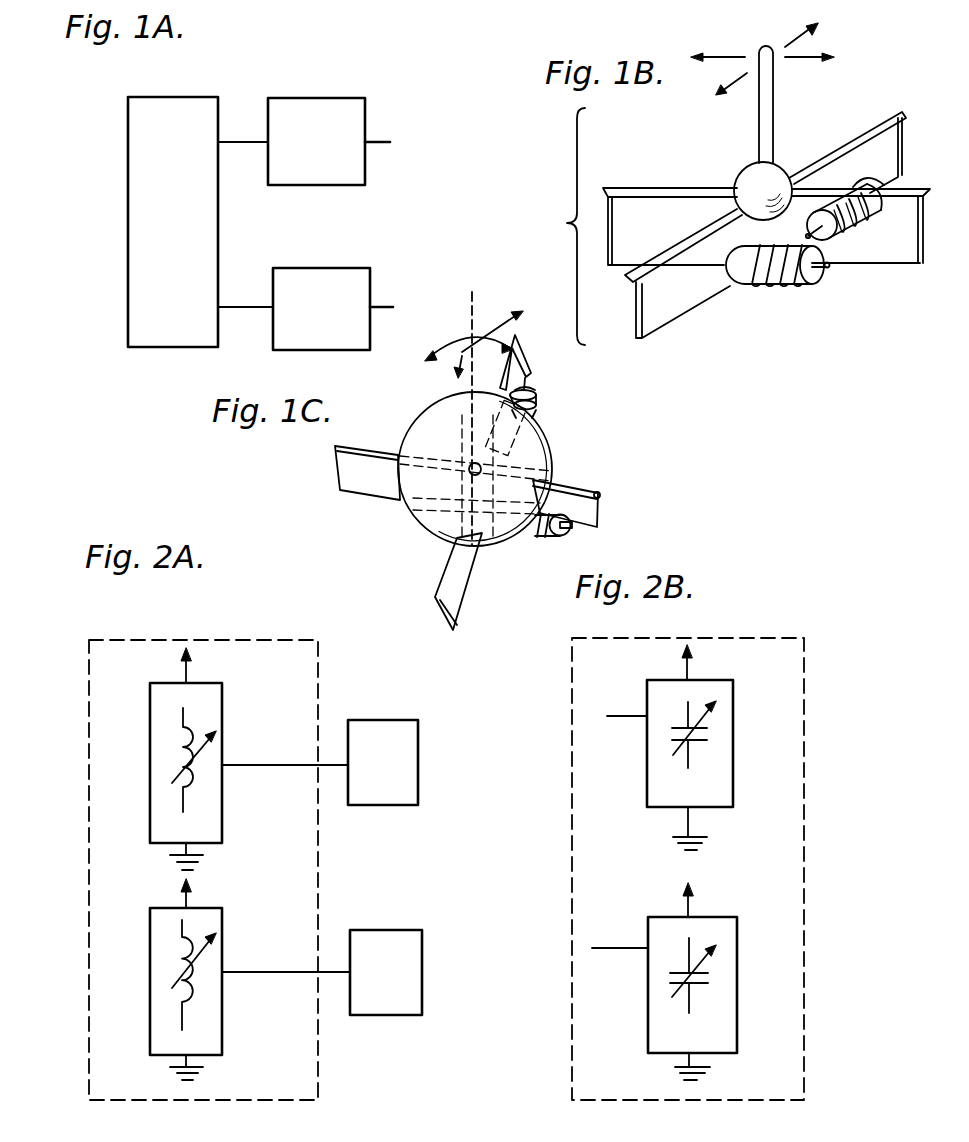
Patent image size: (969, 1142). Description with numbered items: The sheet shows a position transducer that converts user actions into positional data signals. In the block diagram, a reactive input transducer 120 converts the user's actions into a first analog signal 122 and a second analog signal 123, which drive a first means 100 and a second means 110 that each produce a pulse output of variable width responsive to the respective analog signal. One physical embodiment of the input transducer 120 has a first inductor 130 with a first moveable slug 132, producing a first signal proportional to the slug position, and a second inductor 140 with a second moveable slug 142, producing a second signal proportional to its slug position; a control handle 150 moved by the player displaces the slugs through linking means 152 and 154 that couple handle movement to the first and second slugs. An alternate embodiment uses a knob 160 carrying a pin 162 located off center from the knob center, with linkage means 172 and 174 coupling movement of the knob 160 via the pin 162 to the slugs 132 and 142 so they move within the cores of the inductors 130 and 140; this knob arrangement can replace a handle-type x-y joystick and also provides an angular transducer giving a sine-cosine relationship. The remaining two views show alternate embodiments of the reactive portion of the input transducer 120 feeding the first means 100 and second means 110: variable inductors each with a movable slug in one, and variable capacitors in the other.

In FIG. 1A, the first means 100 is at (340, 150).
In FIG. 2A, the first means 100 is at (404, 776).
In FIG. 1A, the second means 110 is at (342, 318).
In FIG. 2A, the second means 110 is at (406, 984).
In FIG. 1A, the reactive input transducer 120 is at (193, 216).
In FIG. 1B, the reactive input transducer 120 is at (729, 195).
In FIG. 2A, the reactive input transducer 120 is at (87, 738).
In FIG. 2B, the reactive input transducer 120 is at (571, 663).
In FIG. 1A, the first analog signal 122 is at (233, 140).
In FIG. 1A, the second analog signal 123 is at (238, 305).
In FIG. 1B, the first inductor 130 is at (812, 285).
In FIG. 1C, the first inductor 130 is at (528, 538).
In FIG. 1B, the first moveable slug 132 is at (828, 267).
In FIG. 1C, the first moveable slug 132 is at (570, 532).
In FIG. 1B, the second inductor 140 is at (867, 207).
In FIG. 1C, the second inductor 140 is at (533, 400).
In FIG. 1B, the second moveable slug 142 is at (813, 208).
In FIG. 1C, the second moveable slug 142 is at (530, 388).
In FIG. 1B, the control handle 150 is at (760, 104).
In FIG. 1B, the linking means 152 is at (700, 160).
In FIG. 1B, the linking means 154 is at (875, 87).
In FIG. 1C, the knob 160 is at (420, 515).
In FIG. 1C, the pin 162 is at (470, 465).
In FIG. 1C, the linkage means 172 is at (395, 420).
In FIG. 1C, the linkage means 174 is at (442, 575).